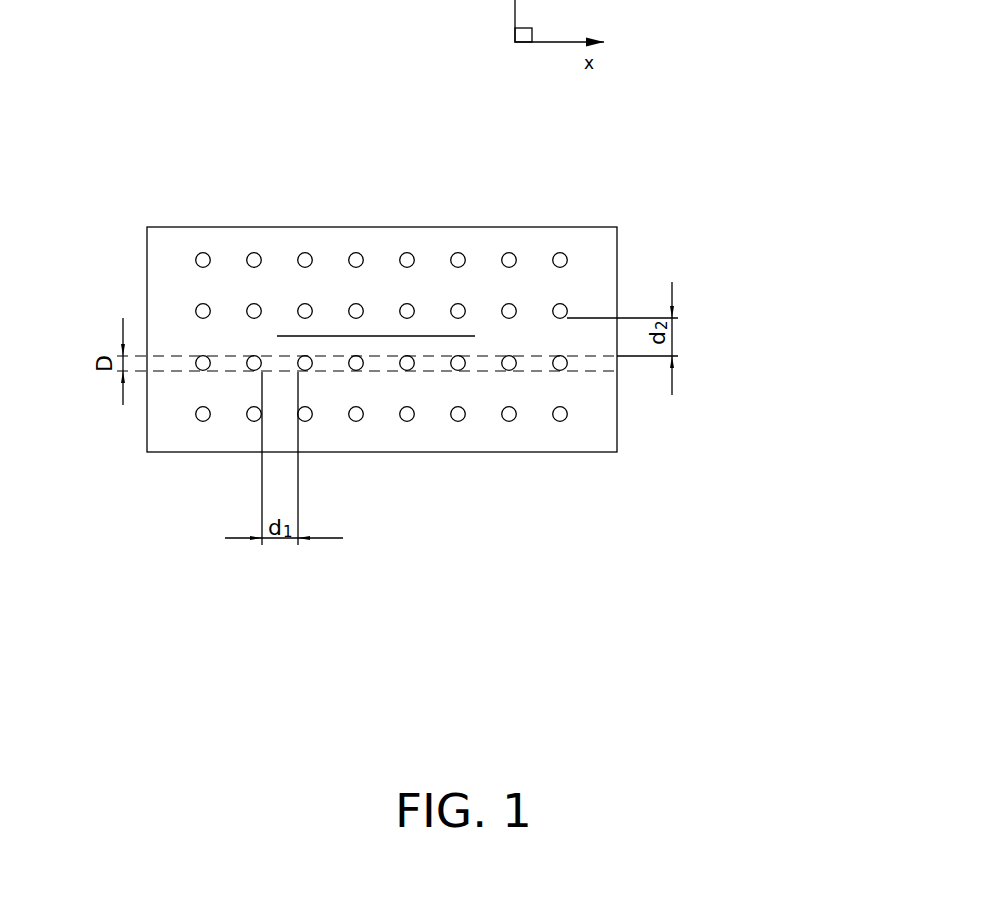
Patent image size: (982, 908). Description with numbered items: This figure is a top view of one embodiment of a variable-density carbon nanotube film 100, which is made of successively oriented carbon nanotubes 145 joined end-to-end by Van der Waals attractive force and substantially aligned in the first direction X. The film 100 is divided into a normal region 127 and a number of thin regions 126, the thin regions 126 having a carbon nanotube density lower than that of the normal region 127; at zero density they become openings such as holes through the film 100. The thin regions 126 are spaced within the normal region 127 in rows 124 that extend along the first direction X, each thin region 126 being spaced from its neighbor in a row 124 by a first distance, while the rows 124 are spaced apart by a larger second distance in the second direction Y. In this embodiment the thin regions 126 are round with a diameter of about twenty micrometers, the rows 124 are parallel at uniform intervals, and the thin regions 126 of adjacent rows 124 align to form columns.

The variable-density carbon nanotube film 100 is at (377, 126).
The normal region 127 is at (162, 254).
The carbon nanotubes 145 is at (381, 336).
The rows 124 is at (377, 363).
The thin regions 126 is at (510, 364).